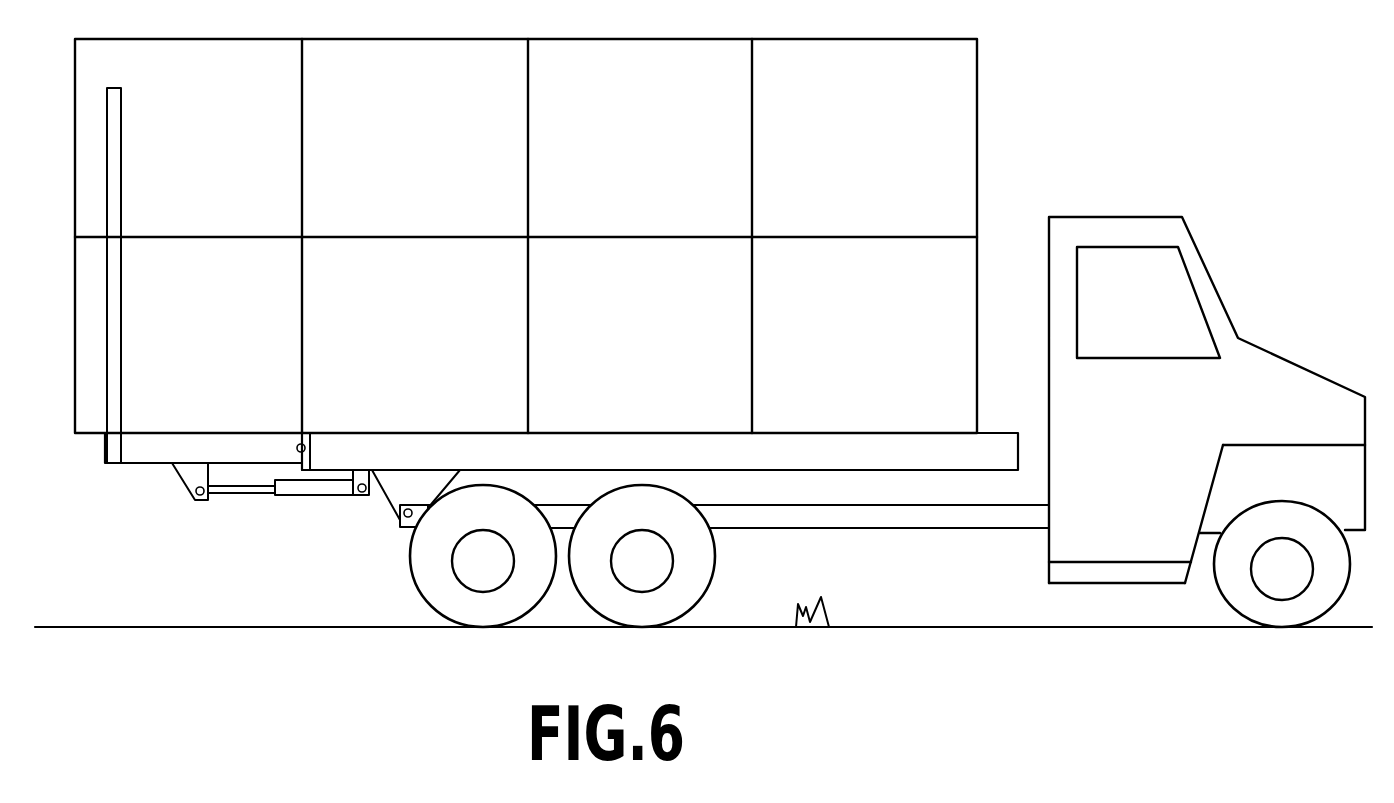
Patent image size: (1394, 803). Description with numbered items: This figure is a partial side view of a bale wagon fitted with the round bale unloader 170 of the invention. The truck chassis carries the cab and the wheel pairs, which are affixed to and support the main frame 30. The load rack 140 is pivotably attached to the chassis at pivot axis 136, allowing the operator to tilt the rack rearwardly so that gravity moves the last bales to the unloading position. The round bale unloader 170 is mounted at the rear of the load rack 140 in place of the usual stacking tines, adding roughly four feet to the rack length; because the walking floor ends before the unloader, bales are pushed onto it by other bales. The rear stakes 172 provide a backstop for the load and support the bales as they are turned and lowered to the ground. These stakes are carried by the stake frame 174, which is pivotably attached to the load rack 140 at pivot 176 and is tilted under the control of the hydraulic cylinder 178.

The main frame 30 is at (870, 520).
The pivot axis 136 is at (408, 527).
The load rack 140 is at (993, 448).
The round bale unloader 170 is at (142, 482).
The rear stakes 172 is at (115, 178).
The stake frame 174 is at (162, 452).
The pivot 176 is at (308, 445).
The hydraulic cylinder 178 is at (282, 490).